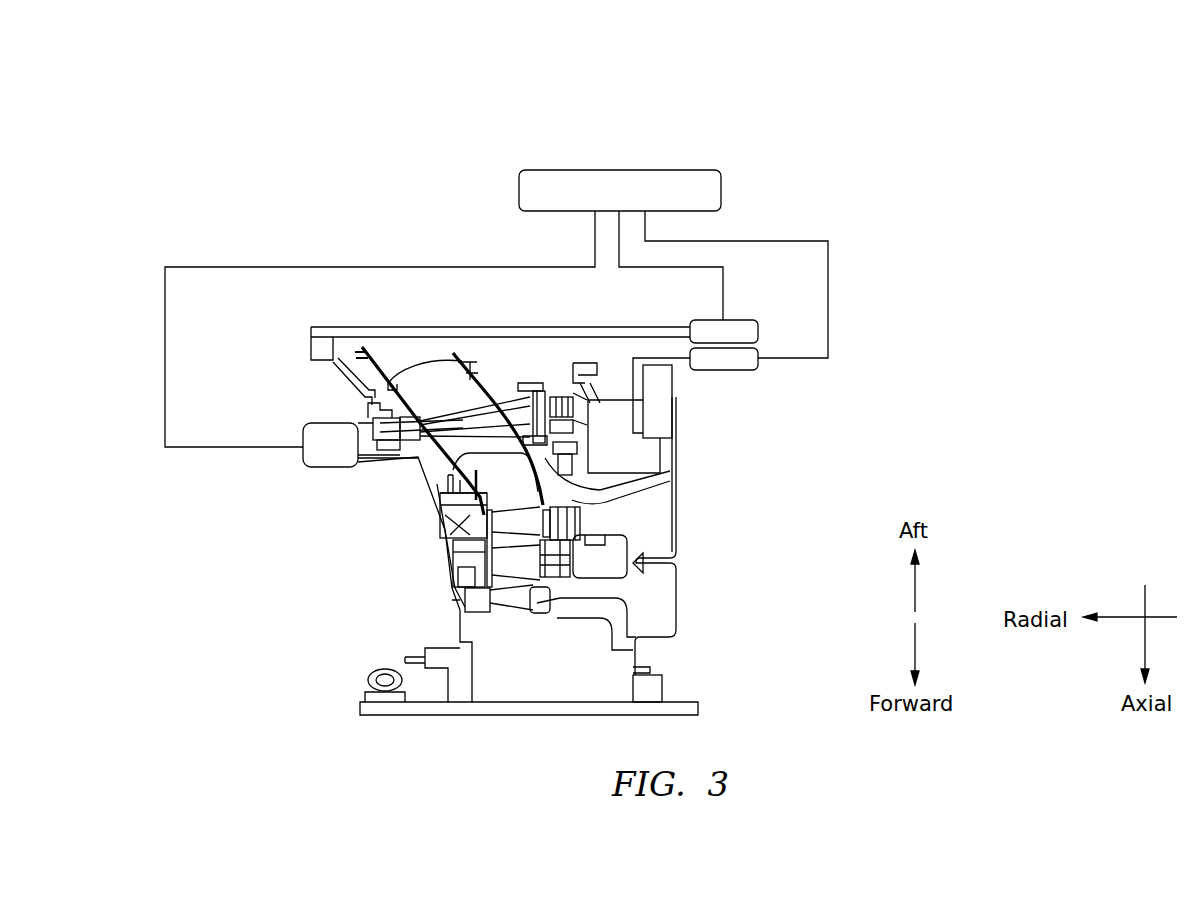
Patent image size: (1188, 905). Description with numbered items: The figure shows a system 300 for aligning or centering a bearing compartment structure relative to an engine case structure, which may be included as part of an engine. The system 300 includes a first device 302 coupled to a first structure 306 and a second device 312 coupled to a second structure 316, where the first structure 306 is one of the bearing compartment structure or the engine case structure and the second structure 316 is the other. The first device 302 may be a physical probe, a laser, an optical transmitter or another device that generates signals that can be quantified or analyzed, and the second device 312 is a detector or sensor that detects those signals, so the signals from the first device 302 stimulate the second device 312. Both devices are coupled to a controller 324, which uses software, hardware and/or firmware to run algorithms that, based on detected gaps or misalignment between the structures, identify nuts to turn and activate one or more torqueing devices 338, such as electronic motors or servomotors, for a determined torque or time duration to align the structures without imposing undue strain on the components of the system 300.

The system 300 is at (1007, 186).
The first device 302 is at (758, 364).
The first structure 306 is at (668, 428).
The second device 312 is at (760, 331).
The second structure 316 is at (311, 349).
The controller 324 is at (673, 169).
The torqueing device 338 is at (312, 470).